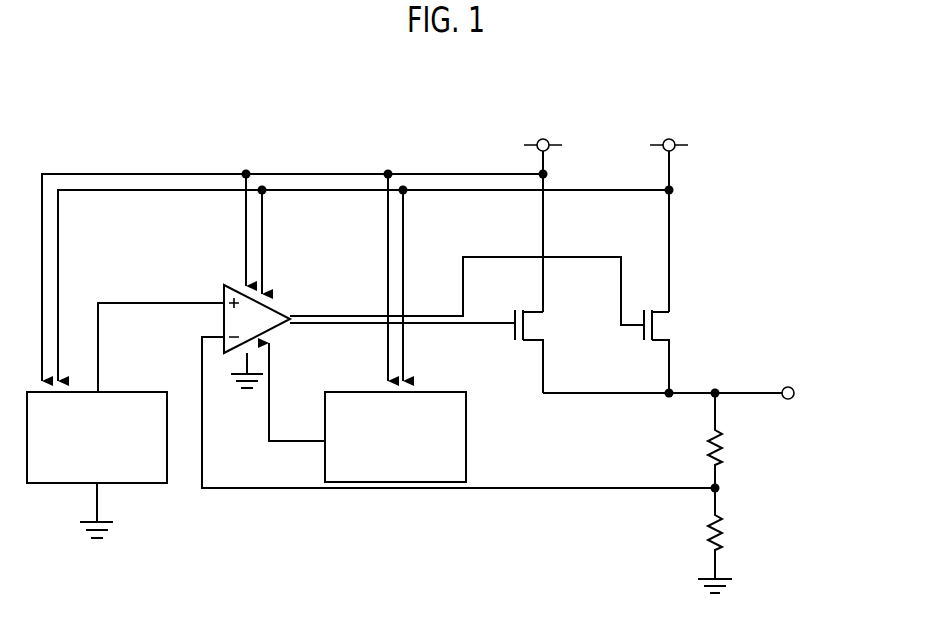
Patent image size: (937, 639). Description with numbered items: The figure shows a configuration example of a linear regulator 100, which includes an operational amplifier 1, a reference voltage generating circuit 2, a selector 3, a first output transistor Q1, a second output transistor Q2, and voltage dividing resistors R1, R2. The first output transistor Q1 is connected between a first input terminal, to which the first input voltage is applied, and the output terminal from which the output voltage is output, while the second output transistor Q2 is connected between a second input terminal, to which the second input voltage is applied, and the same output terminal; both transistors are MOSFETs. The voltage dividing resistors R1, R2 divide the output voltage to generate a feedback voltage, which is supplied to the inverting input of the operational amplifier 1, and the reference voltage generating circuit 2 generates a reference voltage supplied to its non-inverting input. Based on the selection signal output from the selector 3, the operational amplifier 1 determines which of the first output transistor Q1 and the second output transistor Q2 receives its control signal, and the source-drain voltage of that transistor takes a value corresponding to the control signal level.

The linear regulator 100 is at (317, 75).
The operational amplifier 1 is at (277, 307).
The reference voltage generating circuit 2 is at (135, 392).
The selector 3 is at (445, 392).
The first output transistor Q1 is at (548, 328).
The second output transistor Q2 is at (676, 330).
The voltage dividing resistor R1 is at (725, 449).
The voltage dividing resistor R2 is at (725, 534).